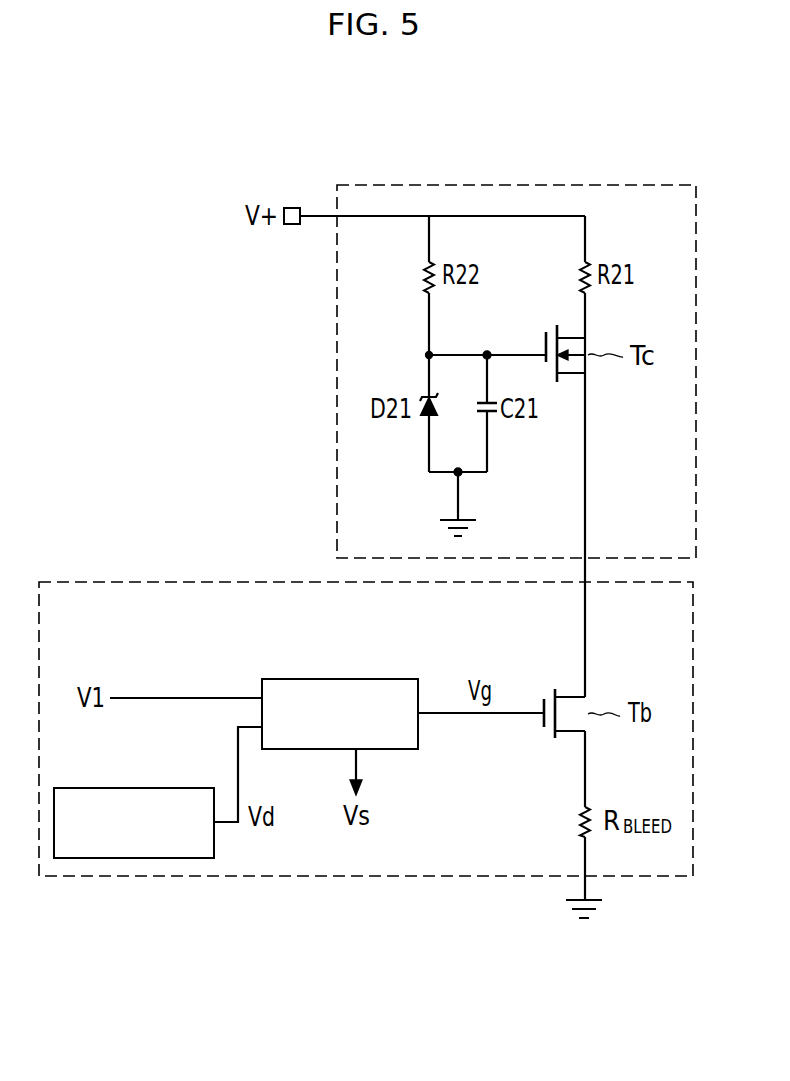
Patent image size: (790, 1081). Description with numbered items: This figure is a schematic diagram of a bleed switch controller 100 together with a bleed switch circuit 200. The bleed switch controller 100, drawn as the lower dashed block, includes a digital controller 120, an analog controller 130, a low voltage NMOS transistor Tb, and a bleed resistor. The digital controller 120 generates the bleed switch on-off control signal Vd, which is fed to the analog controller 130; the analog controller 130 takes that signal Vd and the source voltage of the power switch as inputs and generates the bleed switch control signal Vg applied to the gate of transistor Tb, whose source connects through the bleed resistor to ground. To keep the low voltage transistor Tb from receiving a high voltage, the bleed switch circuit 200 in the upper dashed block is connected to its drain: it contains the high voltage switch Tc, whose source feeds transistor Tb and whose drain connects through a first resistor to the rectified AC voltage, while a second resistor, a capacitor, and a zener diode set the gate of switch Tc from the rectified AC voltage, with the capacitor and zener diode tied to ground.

The bleed switch controller 100 is at (240, 582).
The bleed switch circuit 200 is at (650, 185).
The digital controller 120 is at (165, 788).
The analog controller 130 is at (372, 679).